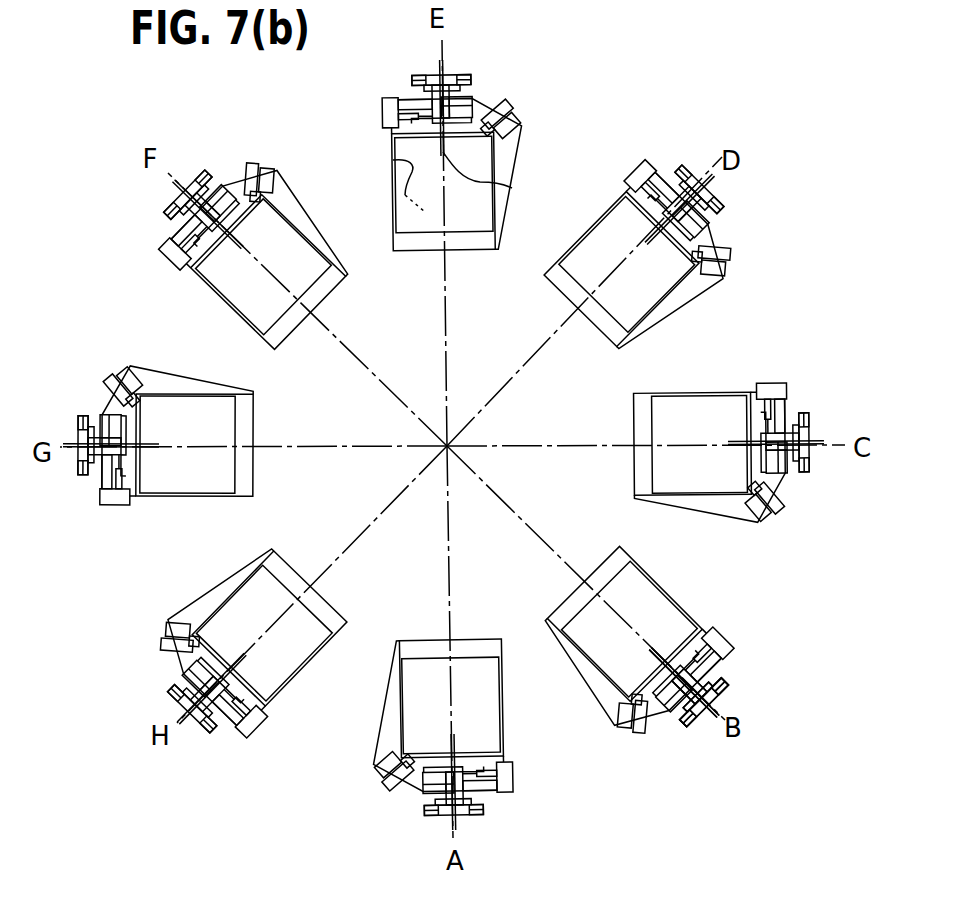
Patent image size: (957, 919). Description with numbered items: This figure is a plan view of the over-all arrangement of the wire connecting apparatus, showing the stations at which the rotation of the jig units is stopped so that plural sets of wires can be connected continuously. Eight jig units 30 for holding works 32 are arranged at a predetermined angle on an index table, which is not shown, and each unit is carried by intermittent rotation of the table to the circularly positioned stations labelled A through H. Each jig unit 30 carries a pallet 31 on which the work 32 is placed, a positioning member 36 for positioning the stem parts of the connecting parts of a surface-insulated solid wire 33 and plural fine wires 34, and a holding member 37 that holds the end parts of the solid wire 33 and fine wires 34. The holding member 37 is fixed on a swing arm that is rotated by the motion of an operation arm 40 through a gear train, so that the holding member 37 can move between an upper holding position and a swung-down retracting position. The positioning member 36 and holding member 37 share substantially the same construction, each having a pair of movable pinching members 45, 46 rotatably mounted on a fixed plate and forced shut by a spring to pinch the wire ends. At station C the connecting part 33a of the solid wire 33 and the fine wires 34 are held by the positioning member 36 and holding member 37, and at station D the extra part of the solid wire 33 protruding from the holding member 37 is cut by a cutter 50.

The jig unit 30 is at (416, 257).
The pallet 31 is at (430, 646).
The work 32 is at (487, 737).
The surface-insulated solid wire 33 is at (393, 160).
The connecting part of the surface-insulated solid wire 33a is at (715, 152).
The plural fine wires 34 is at (512, 188).
The positioning member 36 is at (400, 97).
The holding member 37 is at (475, 82).
The operation arm 40 is at (707, 673).
The movable pinching member 45 is at (420, 76).
The movable pinching member 46 is at (457, 74).
The cutter 50 is at (688, 150).